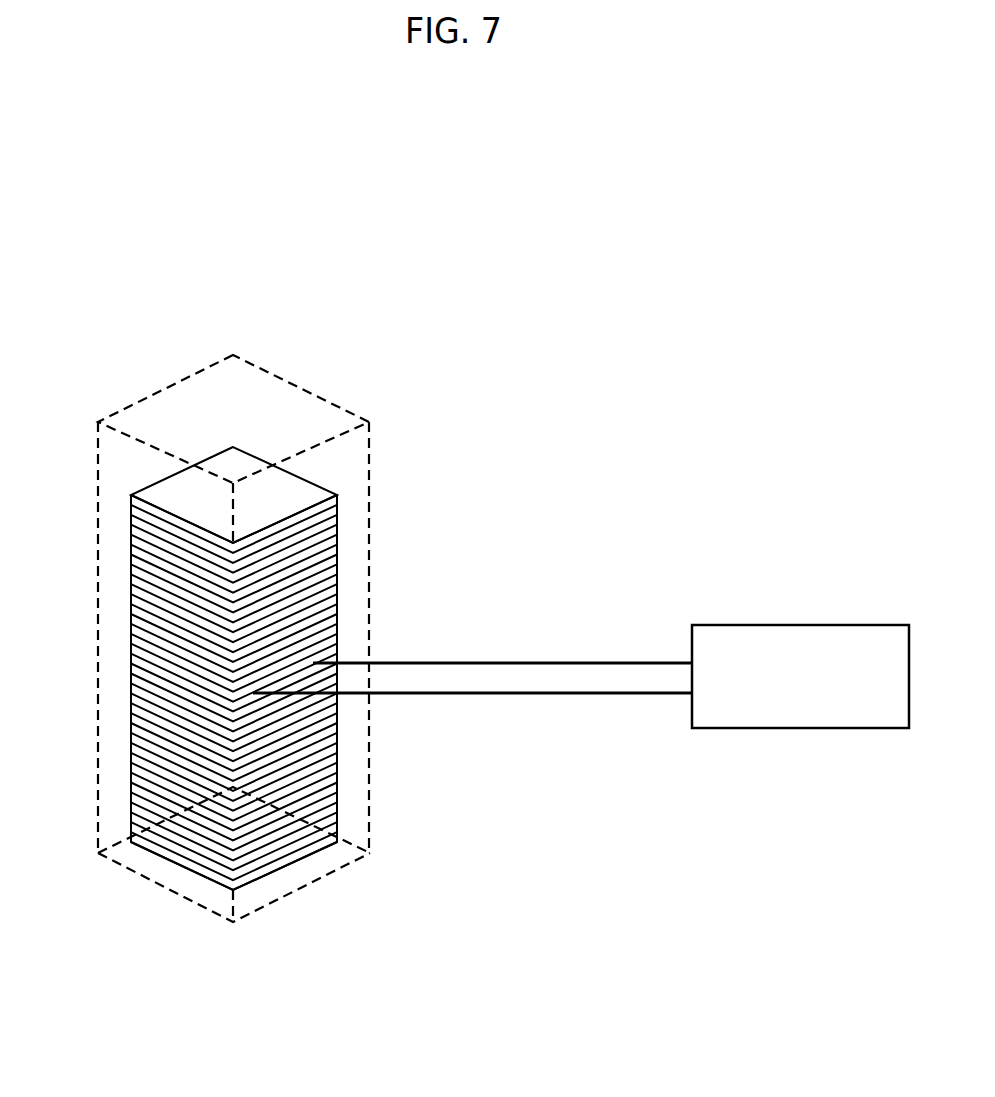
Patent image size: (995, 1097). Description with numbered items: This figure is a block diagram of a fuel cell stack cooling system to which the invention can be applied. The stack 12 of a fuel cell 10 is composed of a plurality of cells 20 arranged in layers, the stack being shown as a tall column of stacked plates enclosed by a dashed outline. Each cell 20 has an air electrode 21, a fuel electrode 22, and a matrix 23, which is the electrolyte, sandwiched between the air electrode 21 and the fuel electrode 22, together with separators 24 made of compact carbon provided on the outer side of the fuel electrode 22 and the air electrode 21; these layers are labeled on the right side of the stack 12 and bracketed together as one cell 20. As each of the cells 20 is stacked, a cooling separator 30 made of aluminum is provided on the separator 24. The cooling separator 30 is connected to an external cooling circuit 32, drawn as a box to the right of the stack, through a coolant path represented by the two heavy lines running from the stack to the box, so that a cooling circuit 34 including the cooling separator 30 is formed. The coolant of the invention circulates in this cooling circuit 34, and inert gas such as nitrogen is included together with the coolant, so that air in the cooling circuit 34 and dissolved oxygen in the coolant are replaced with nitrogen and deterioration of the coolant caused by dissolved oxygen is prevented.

The fuel cell 10 is at (369, 458).
The stack 12 is at (115, 703).
The cell 20 is at (427, 678).
The air electrode 21 is at (332, 700).
The fuel electrode 22 is at (332, 744).
The matrix 23 is at (332, 724).
The separator 24 is at (330, 686).
The cooling separator 30 is at (330, 656).
The external cooling circuit 32 is at (799, 624).
The cooling circuit 34 is at (584, 574).